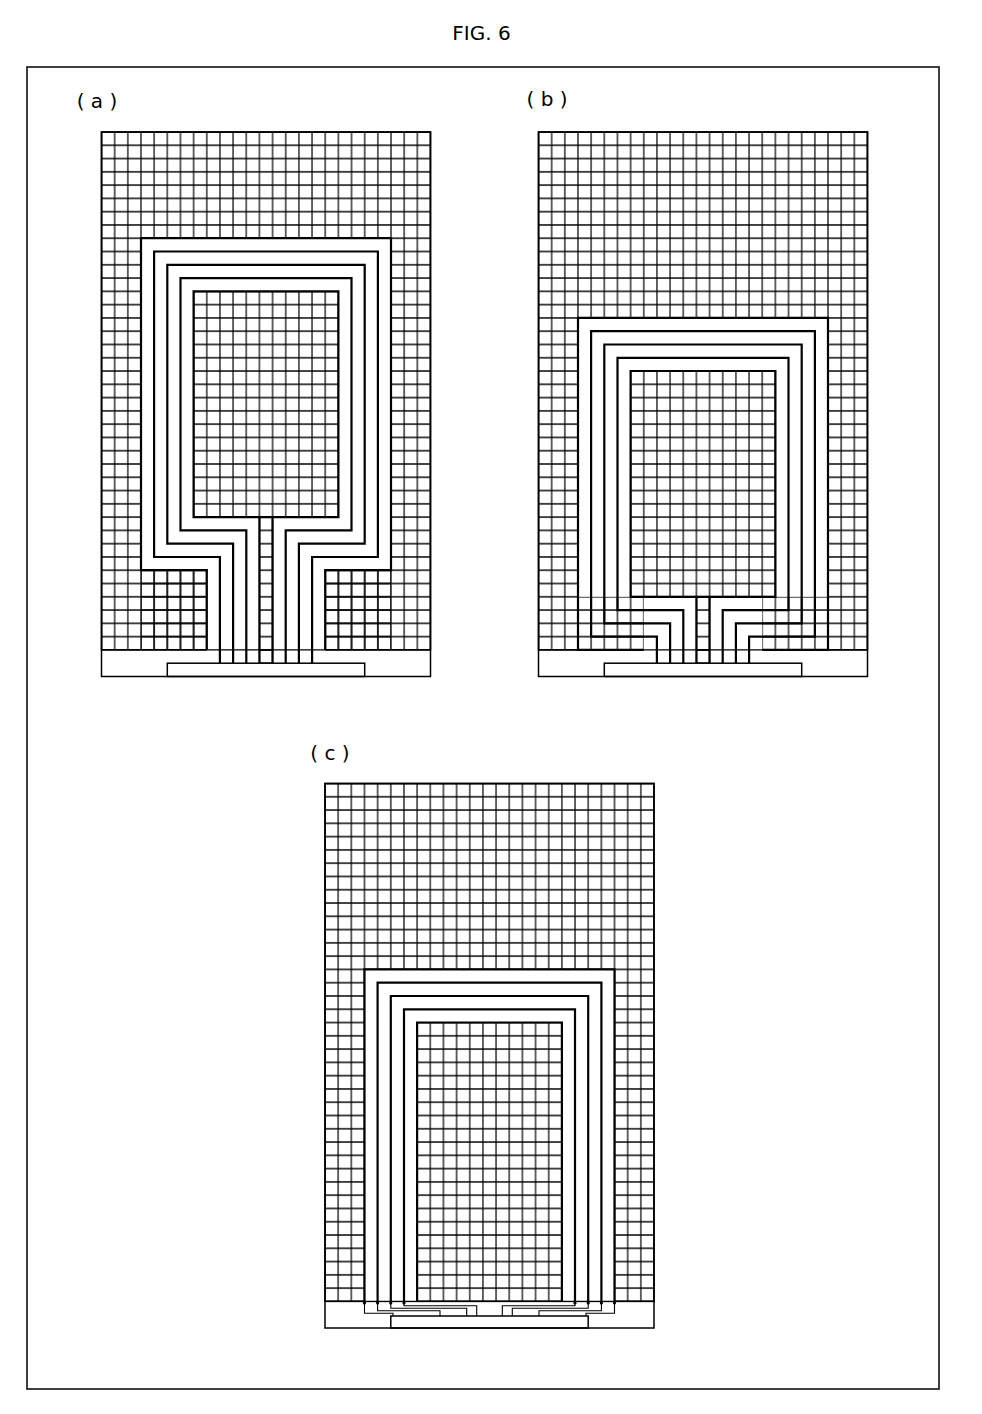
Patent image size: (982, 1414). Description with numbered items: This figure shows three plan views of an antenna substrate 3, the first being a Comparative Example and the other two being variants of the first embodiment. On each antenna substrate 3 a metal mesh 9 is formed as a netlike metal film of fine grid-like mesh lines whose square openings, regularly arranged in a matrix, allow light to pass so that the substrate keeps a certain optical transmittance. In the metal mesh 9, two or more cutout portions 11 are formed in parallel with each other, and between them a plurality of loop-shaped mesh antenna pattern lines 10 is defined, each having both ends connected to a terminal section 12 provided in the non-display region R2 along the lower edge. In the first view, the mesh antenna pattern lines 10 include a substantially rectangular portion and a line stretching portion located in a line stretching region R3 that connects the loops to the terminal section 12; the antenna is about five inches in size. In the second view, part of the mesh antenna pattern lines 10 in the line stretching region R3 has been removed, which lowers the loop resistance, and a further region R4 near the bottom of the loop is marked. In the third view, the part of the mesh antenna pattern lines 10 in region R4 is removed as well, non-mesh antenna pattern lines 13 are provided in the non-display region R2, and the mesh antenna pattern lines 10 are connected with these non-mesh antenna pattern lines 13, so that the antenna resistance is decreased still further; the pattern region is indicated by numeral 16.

The antenna substrate 3 is at (372, 124).
The metal mesh 9 is at (352, 175).
The mesh antenna pattern lines 10 is at (352, 295).
The cutout portions 11 is at (357, 453).
The terminal section 12 is at (353, 677).
The non-mesh antenna pattern lines 13 is at (605, 1327).
The wiring region 16 is at (885, 303).
The non-display region R2 is at (125, 663).
The line stretching region R3 is at (440, 568).
The region R4 is at (880, 597).